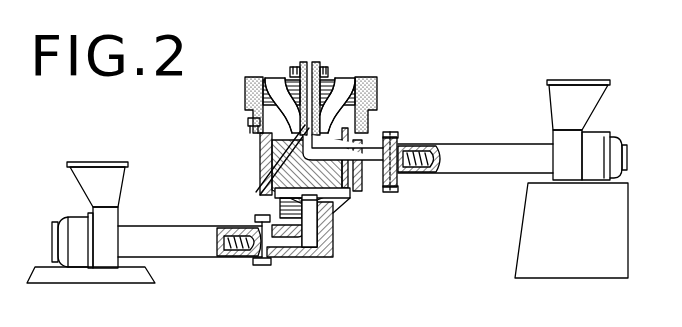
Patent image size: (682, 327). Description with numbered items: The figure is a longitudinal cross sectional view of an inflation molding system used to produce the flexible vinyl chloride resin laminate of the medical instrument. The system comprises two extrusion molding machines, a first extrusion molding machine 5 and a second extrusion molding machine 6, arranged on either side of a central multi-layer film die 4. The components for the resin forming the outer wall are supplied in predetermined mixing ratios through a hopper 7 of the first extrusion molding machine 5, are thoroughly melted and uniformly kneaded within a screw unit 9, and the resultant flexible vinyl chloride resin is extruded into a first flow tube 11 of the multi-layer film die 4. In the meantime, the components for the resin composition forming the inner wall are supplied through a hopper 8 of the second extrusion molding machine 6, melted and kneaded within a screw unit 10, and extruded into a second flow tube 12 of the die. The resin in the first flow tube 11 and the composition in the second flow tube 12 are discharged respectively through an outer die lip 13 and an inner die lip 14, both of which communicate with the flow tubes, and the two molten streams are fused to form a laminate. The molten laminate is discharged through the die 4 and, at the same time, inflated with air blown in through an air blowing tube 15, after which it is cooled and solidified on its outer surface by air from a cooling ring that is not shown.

The multi-layer film die 4 is at (348, 200).
The first extrusion molding machine 5 is at (148, 225).
The second extrusion molding machine 6 is at (476, 144).
The hopper 7 is at (101, 160).
The hopper 8 is at (583, 80).
The screw unit 9 is at (237, 247).
The screw unit 10 is at (430, 167).
The first flow tube 11 is at (293, 240).
The second flow tube 12 is at (383, 136).
The outer die lip 13 is at (256, 75).
The inner die lip 14 is at (274, 77).
The air blowing tube 15 is at (258, 191).